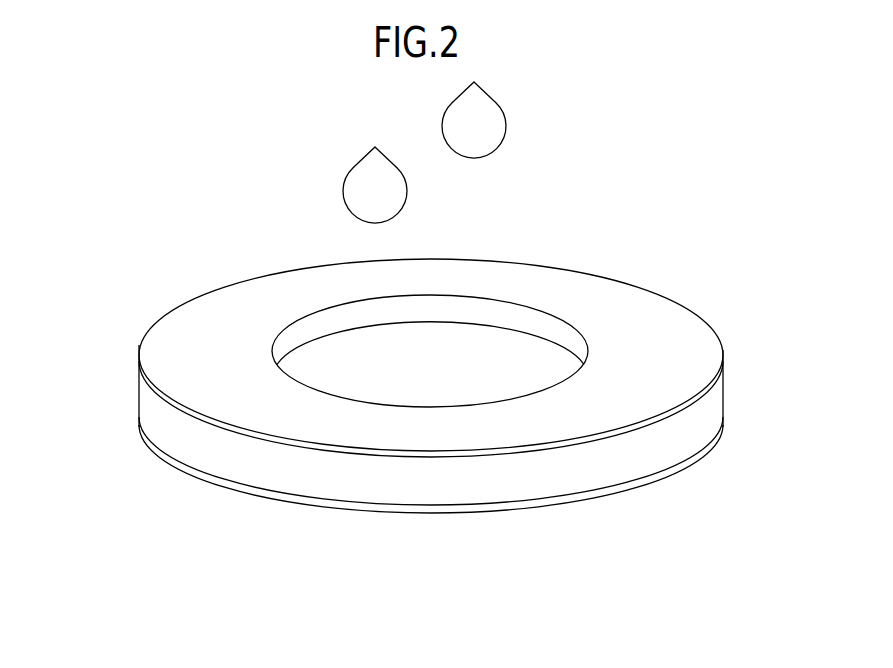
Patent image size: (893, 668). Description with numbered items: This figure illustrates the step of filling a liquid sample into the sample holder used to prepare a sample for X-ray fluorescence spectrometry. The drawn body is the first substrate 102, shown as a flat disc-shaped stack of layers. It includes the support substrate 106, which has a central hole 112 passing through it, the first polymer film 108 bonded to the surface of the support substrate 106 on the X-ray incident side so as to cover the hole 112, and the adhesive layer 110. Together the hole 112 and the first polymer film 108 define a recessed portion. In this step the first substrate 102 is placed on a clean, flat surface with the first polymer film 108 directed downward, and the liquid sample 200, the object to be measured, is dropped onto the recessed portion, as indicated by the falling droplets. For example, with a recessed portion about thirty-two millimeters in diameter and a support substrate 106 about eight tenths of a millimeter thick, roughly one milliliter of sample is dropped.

The first substrate 102 is at (399, 411).
The support substrate 106 is at (140, 400).
The first polymer film 108 is at (160, 453).
The adhesive layer 110 is at (150, 349).
The hole 112 is at (473, 343).
The liquid sample 200 is at (507, 123).